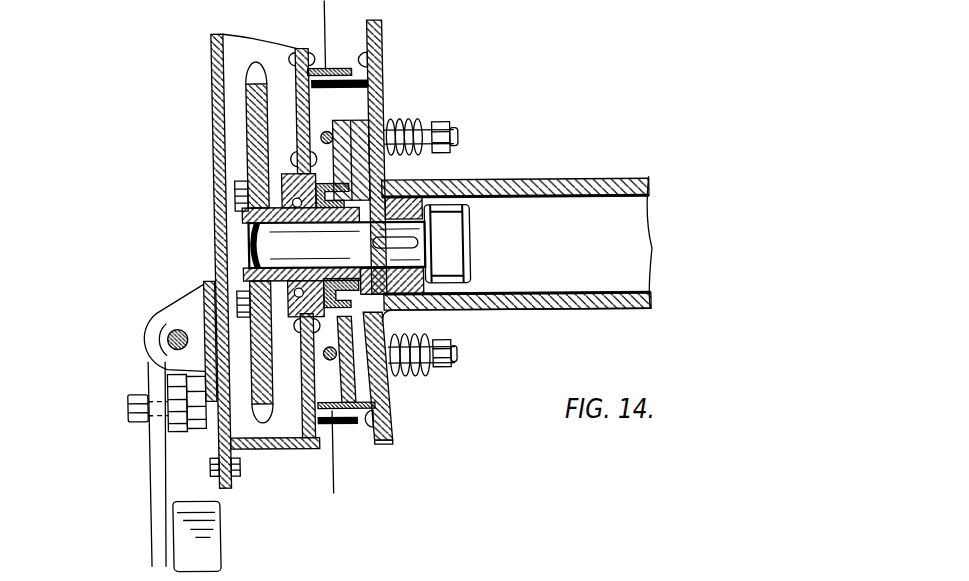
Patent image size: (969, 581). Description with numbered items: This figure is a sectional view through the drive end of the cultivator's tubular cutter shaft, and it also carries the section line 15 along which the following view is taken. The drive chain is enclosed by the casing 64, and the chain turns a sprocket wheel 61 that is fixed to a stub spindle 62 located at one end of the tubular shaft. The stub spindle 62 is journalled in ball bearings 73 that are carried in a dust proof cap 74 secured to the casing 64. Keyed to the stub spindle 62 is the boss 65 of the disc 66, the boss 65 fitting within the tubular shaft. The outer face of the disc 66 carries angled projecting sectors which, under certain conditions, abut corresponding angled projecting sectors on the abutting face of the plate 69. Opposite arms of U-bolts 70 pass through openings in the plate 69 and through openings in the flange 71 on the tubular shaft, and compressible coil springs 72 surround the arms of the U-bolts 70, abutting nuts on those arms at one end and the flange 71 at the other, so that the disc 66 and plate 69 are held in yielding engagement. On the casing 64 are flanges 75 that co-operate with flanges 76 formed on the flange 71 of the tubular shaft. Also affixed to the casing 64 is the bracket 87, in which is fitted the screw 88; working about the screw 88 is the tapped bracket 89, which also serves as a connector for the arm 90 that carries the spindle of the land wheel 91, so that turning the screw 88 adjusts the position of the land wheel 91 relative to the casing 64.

The section line 15— 15 is at (355, 466).
The sprocket wheel 61 is at (300, 162).
The stub spindle 62 is at (275, 238).
The casing 64 is at (212, 184).
The boss 65 is at (500, 178).
The disc 66 is at (404, 117).
The plate 69 is at (352, 378).
The U-bolts 70 is at (323, 135).
The flange 71 is at (388, 438).
The compressible coil springs 72 is at (460, 133).
The ball bearings 73 is at (247, 212).
The dust proof cap 74 is at (288, 180).
The flanges 75 is at (355, 66).
The flanges 76 is at (386, 82).
The bracket 87 is at (203, 313).
The screw 88 is at (168, 338).
The tapped bracket 89 is at (190, 363).
The arm 90 is at (165, 478).
The land wheel 91 is at (205, 541).